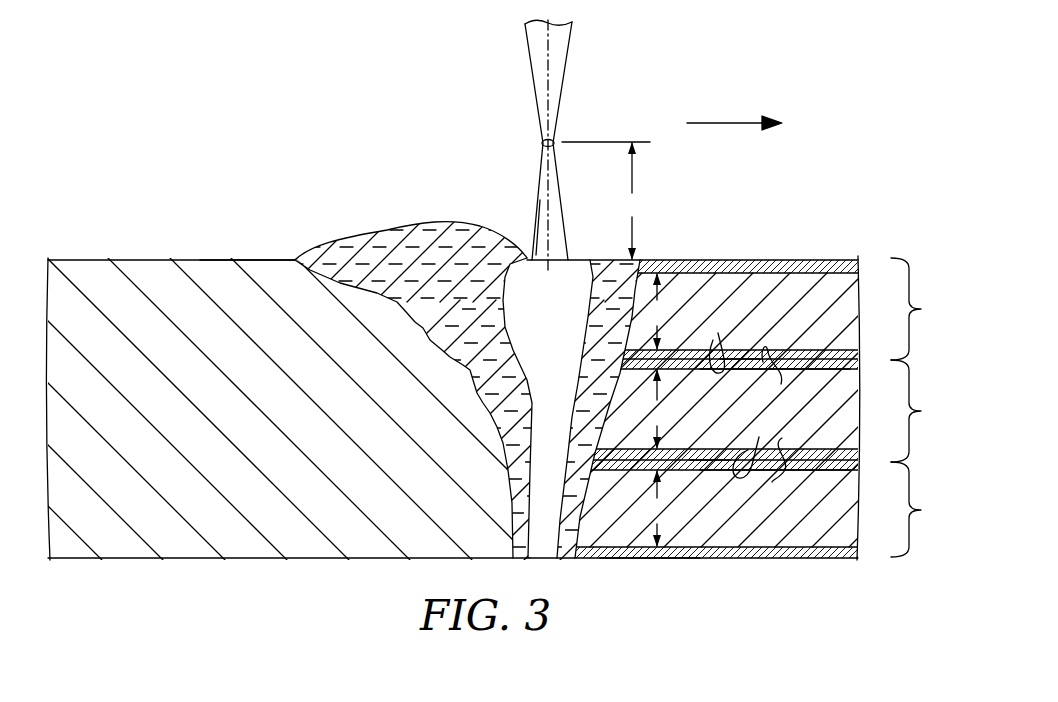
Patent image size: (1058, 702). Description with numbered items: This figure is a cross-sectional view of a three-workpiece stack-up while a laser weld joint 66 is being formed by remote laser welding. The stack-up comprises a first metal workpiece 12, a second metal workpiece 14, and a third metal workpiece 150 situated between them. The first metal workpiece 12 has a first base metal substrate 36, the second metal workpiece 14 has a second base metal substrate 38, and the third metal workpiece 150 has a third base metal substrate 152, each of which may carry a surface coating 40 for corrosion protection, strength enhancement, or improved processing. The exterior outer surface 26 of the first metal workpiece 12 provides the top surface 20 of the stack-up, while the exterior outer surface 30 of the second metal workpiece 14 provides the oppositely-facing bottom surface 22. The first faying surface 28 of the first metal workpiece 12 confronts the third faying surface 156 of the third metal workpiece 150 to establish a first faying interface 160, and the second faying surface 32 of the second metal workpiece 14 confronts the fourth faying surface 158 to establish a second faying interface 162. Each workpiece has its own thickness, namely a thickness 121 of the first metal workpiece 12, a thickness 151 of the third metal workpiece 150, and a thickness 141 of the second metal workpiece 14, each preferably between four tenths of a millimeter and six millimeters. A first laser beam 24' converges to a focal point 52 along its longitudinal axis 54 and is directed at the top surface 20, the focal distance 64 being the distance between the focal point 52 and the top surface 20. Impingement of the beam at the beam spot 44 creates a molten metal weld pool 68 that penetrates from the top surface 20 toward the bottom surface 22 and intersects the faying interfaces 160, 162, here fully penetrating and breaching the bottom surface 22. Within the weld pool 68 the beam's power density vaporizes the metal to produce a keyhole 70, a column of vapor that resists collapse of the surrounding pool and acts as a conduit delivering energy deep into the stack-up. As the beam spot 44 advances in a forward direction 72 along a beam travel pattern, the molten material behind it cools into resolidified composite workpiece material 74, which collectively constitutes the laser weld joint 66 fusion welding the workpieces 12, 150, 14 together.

The first metal workpiece 12 is at (922, 309).
The second metal workpiece 14 is at (922, 509).
The third metal workpiece 150 is at (926, 411).
The top surface 20 is at (742, 257).
The bottom surface 22 is at (625, 560).
The exterior outer surface 26 is at (818, 258).
The first faying surface 28 is at (712, 340).
The exterior outer surface 30 is at (792, 560).
The second faying surface 32 is at (772, 475).
The first base metal substrate 36 is at (845, 325).
The second base metal substrate 38 is at (845, 521).
The surface coating 40 is at (858, 263).
The beam spot 44 is at (560, 250).
The focal point 52 is at (553, 137).
The longitudinal axis 54 is at (550, 60).
The focal distance 64 is at (606, 200).
The laser weld joint 66 is at (187, 290).
The molten metal weld pool 68 is at (402, 242).
The keyhole 70 is at (538, 267).
The forward direction 72 is at (722, 123).
The resolidified composite workpiece material 74 is at (243, 283).
The first laser beam 24' is at (522, 140).
The thickness of the first metal workpiece 121 is at (658, 311).
The thickness of the second metal workpiece 141 is at (659, 508).
The thickness of the third metal workpiece 151 is at (658, 409).
The third base metal substrate 152 is at (852, 425).
The third faying surface 156 is at (784, 377).
The fourth faying surface 158 is at (758, 443).
The first faying interface 160 is at (738, 350).
The second faying interface 162 is at (702, 466).